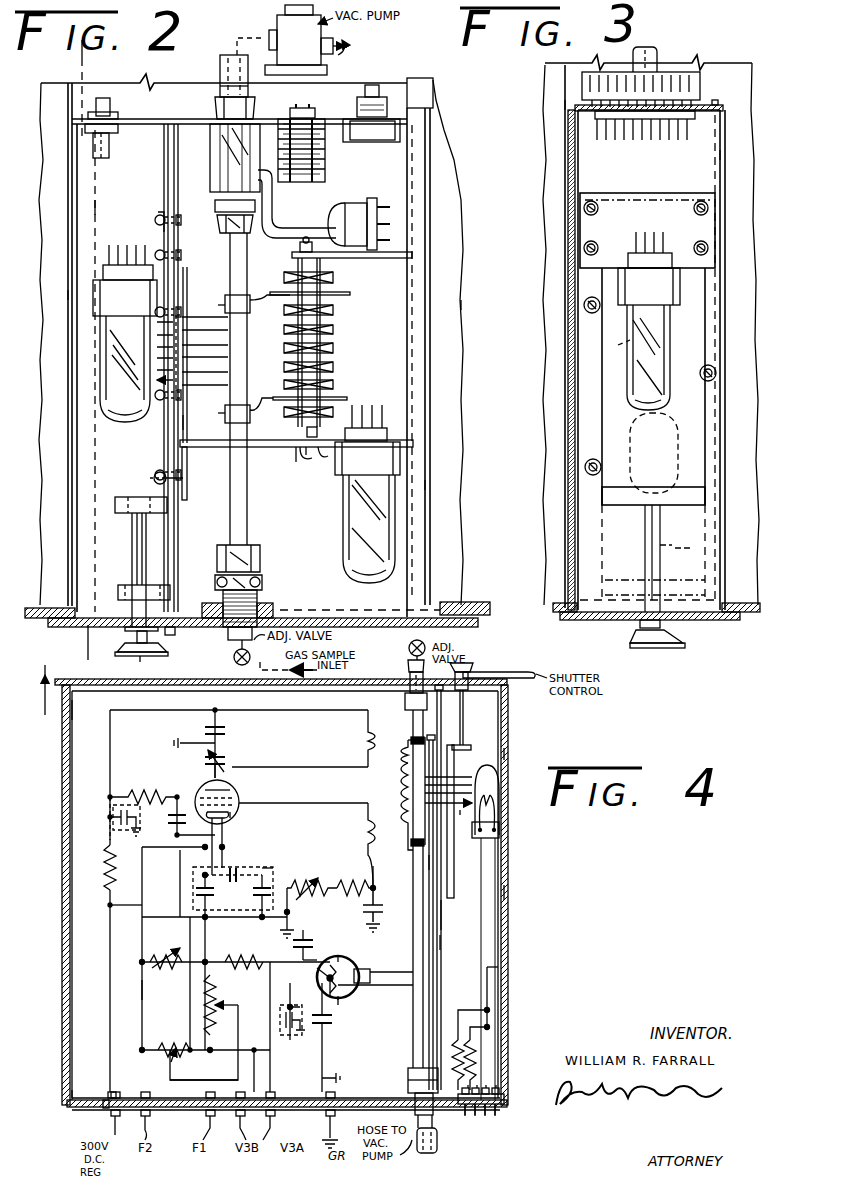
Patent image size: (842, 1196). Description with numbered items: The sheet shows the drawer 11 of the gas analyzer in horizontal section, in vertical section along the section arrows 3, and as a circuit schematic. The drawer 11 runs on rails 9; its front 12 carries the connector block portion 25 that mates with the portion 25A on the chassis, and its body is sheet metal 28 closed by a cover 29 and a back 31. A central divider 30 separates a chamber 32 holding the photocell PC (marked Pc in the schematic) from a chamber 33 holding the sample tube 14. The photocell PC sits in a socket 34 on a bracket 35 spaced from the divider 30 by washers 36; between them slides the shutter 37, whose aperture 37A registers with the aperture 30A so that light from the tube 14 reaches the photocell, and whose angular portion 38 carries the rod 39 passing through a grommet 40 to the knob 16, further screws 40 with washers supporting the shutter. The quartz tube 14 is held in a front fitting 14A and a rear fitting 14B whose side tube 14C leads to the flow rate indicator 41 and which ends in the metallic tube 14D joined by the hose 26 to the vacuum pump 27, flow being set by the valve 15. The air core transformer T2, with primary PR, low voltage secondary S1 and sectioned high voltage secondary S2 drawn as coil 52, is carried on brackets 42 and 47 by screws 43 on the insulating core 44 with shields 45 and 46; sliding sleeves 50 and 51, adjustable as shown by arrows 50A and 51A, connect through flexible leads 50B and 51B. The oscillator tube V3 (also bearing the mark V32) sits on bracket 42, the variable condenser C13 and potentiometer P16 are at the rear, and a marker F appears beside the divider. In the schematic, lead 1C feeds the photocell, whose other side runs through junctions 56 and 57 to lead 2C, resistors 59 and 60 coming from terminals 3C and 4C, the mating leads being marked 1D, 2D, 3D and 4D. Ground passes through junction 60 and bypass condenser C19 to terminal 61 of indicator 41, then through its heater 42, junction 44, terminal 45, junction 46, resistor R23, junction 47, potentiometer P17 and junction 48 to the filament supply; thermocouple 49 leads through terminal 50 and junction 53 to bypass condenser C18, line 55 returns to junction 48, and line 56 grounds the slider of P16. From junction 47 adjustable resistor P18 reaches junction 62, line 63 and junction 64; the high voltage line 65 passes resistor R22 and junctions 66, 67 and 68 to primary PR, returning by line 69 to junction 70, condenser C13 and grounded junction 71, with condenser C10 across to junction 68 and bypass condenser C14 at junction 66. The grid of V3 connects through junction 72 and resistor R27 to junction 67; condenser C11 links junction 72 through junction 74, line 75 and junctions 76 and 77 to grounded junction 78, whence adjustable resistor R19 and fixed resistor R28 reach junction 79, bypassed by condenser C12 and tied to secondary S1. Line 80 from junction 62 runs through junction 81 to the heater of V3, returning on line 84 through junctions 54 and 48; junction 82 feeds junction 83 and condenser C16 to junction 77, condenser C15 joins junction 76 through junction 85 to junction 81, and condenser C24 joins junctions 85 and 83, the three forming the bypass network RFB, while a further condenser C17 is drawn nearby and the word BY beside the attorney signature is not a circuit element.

In FIG. 2, the section arrows 3 is at (92, 73).
In FIG. 2, the rails 9 is at (70, 292).
In FIG. 3, the rails 9 is at (568, 104).
In FIG. 2, the drawer 11 is at (440, 484).
In FIG. 4, the drawer 11 is at (510, 752).
In FIG. 2, the front of the drawer 12 is at (480, 600).
In FIG. 4, the front of the drawer 12 is at (78, 676).
In FIG. 2, the sample tube 14 is at (250, 526).
In FIG. 4, the sample tube 14 is at (410, 996).
In FIG. 2, the front fitting 14A is at (262, 578).
In FIG. 4, the front fitting 14A is at (440, 710).
In FIG. 2, the rear fitting 14B is at (226, 160).
In FIG. 4, the rear fitting 14B is at (408, 1080).
In FIG. 2, the side connection tube 14C is at (290, 236).
In FIG. 2, the metallic tube 14D is at (220, 73).
In FIG. 3, the metallic tube 14D is at (664, 56).
In FIG. 2, the valve 15 is at (233, 658).
In FIG. 4, the valve 15 is at (410, 655).
In FIG. 2, the knob 16 is at (143, 657).
In FIG. 3, the knob 16 is at (672, 650).
In FIG. 4, the knob 16 is at (472, 658).
In FIG. 2, the connector block portion on drawer 25 is at (88, 128).
In FIG. 3, the connector block portion on drawer 25 is at (690, 117).
In FIG. 4, the connector block portion on drawer 25 is at (107, 1090).
In FIG. 2, the connector block portion on chassis 25A is at (90, 99).
In FIG. 3, the connector block portion on chassis 25A is at (700, 90).
In FIG. 4, the connector block portion on chassis 25A is at (105, 1108).
In FIG. 2, the hose connection 26 is at (235, 36).
In FIG. 4, the hose connection 26 is at (418, 1128).
In FIG. 2, the vacuum pump 27 is at (280, 22).
In FIG. 2, the sheet metal 28 is at (463, 303).
In FIG. 4, the sheet metal 28 is at (512, 893).
In FIG. 3, the cover 29 is at (722, 155).
In FIG. 2, the central divider 30 is at (164, 170).
In FIG. 3, the central divider 30 is at (712, 516).
In FIG. 4, the central divider 30 is at (446, 925).
In FIG. 2, the aperture in divider wall 30A is at (182, 344).
In FIG. 3, the aperture in divider wall 30A is at (630, 370).
In FIG. 4, the aperture in divider wall 30A is at (448, 790).
In FIG. 2, the back of the drawer 31 is at (196, 119).
In FIG. 4, the back of the drawer 31 is at (82, 1103).
In FIG. 2, the photocell chamber 32 is at (122, 206).
In FIG. 4, the photocell chamber 32 is at (476, 948).
In FIG. 2, the tube chamber 33 is at (367, 182).
In FIG. 4, the tube chamber 33 is at (96, 717).
In FIG. 2, the socket 34 is at (108, 294).
In FIG. 3, the socket 34 is at (665, 287).
In FIG. 2, the bracket 35 is at (158, 240).
In FIG. 3, the bracket 35 is at (640, 208).
In FIG. 2, the washers 36 is at (159, 214).
In FIG. 3, the washers 36 is at (597, 243).
In FIG. 2, the shutter 37 is at (170, 290).
In FIG. 3, the shutter 37 is at (690, 445).
In FIG. 4, the shutter 37 is at (452, 878).
In FIG. 3, the shutter aperture 37A is at (625, 373).
In FIG. 4, the shutter aperture 37A is at (462, 815).
In FIG. 2, the angularly disposed portion 38 is at (128, 497).
In FIG. 3, the angularly disposed portion 38 is at (624, 510).
In FIG. 2, the rod 39 is at (134, 548).
In FIG. 3, the rod 39 is at (663, 625).
In FIG. 4, the rod 39 is at (468, 700).
In FIG. 2, the grommet 40 is at (160, 632).
In FIG. 3, the grommet 40 is at (584, 308).
In FIG. 2, the flow rate indicator 41 is at (353, 210).
In FIG. 4, the flow rate indicator 41 is at (345, 964).
In FIG. 2, the bracket 42 is at (306, 458).
In FIG. 4, the bracket 42 is at (370, 970).
In FIG. 2, the end screws 43 is at (308, 244).
In FIG. 2, the insulating core 44 is at (334, 412).
In FIG. 4, the insulating core 44 is at (332, 957).
In FIG. 2, the insulating shield 45 is at (330, 396).
In FIG. 4, the insulating shield 45 is at (320, 968).
In FIG. 2, the insulating shield 46 is at (343, 296).
In FIG. 4, the insulating shield 46 is at (318, 960).
In FIG. 2, the bracket 47 is at (378, 258).
In FIG. 4, the bracket 47 is at (205, 960).
In FIG. 4, the junction 48 is at (210, 1050).
In FIG. 4, the thermocouple 49 is at (345, 996).
In FIG. 2, the metal sleeve 50 is at (246, 405).
In FIG. 4, the metal sleeve 50 is at (320, 982).
In FIG. 2, the adjustment arrows 50A is at (218, 402).
In FIG. 4, the adjustment arrows 50A is at (408, 852).
In FIG. 2, the flexible lead 50B is at (258, 418).
In FIG. 2, the metal sleeve 51 is at (246, 312).
In FIG. 4, the metal sleeve 51 is at (403, 746).
In FIG. 2, the adjustment arrows 51A is at (218, 295).
In FIG. 4, the adjustment arrows 51A is at (400, 760).
In FIG. 2, the flexible lead 51B is at (256, 296).
In FIG. 4, the coil 52 is at (396, 790).
In FIG. 4, the junction 53 is at (290, 1005).
In FIG. 4, the junction 54 is at (196, 1059).
In FIG. 2, the line 55 is at (306, 106).
In FIG. 4, the line 55 is at (254, 1050).
In FIG. 4, the junction 56 is at (190, 1080).
In FIG. 4, the junction 57 is at (485, 1010).
In FIG. 4, the resistor 59 is at (450, 1038).
In FIG. 4, the resistor 60 is at (322, 1078).
In FIG. 4, the indicator terminal 61 is at (318, 990).
In FIG. 4, the junction 62 is at (142, 962).
In FIG. 4, the line 63 is at (142, 990).
In FIG. 4, the junction 64 is at (142, 1050).
In FIG. 4, the supply line 65 is at (108, 997).
In FIG. 4, the junction 66 is at (112, 818).
In FIG. 4, the junction 67 is at (109, 790).
In FIG. 4, the junction 68 is at (215, 708).
In FIG. 4, the line 69 is at (300, 768).
In FIG. 4, the junction 70 is at (214, 768).
In FIG. 4, the grounded junction 71 is at (222, 742).
In FIG. 4, the junction 72 is at (177, 795).
In FIG. 4, the junction 74 is at (176, 834).
In FIG. 4, the line 75 is at (180, 888).
In FIG. 4, the junction 76 is at (205, 918).
In FIG. 4, the junction 77 is at (284, 924).
In FIG. 4, the grounded junction 78 is at (288, 912).
In FIG. 4, the junction 79 is at (375, 890).
In FIG. 4, the line 80 is at (142, 916).
In FIG. 4, the junction 81 is at (203, 848).
In FIG. 4, the junction 82 is at (224, 846).
In FIG. 4, the junction 83 is at (268, 870).
In FIG. 4, the line 84 is at (190, 930).
In FIG. 4, the junction 85 is at (205, 875).
In FIG. 4, the condenser C10 is at (210, 728).
In FIG. 4, the condenser C11 is at (174, 816).
In FIG. 4, the condenser C12 is at (375, 917).
In FIG. 2, the variable air insulated condenser C13 is at (325, 157).
In FIG. 4, the variable air insulated condenser C13 is at (230, 760).
In FIG. 4, the radio frequency bypass condenser C14 is at (116, 830).
In FIG. 4, the condenser C15 is at (200, 892).
In FIG. 4, the condenser C16 is at (262, 896).
In FIG. 4, the capacitor C17 is at (306, 940).
In FIG. 4, the radio frequency bypass condenser C18 is at (280, 1012).
In FIG. 4, the radio frequency bypass condenser C19 is at (328, 1020).
In FIG. 4, the condenser C24 is at (233, 880).
In FIG. 4, the resistor R19 is at (312, 885).
In FIG. 4, the resistor R22 is at (99, 867).
In FIG. 4, the resistor R23 is at (242, 953).
In FIG. 4, the resistor R27 is at (143, 786).
In FIG. 4, the fixed resistor R28 is at (355, 883).
In FIG. 2, the potentiometer P16 is at (385, 137).
In FIG. 4, the potentiometer P16 is at (168, 1045).
In FIG. 4, the potentiometer resistor P17 is at (213, 992).
In FIG. 4, the adjustable resistor P18 is at (166, 967).
In FIG. 2, the radio frequency oscillator tube V3 is at (343, 528).
In FIG. 4, the radio frequency oscillator tube V3 is at (238, 790).
In FIG. 4, the tube element V32 is at (236, 812).
In FIG. 2, the transformer T2 is at (348, 322).
In FIG. 4, the transformer T2 is at (370, 708).
In FIG. 2, the low voltage secondary S1 is at (334, 276).
In FIG. 2, the high voltage output secondary S2 is at (340, 348).
In FIG. 2, the photocell PC is at (118, 416).
In FIG. 3, the photocell PC is at (680, 338).
In FIG. 4, the photocell Pc is at (488, 765).
In FIG. 2, the primary winding PR is at (296, 456).
In FIG. 4, the primary winding PR is at (366, 745).
In FIG. 2, the filament F is at (180, 425).
In FIG. 4, the filament F is at (428, 860).
In FIG. 4, the radio frequency bypass network RFB is at (110, 808).
In FIG. 4, the terminal block BY is at (495, 1100).
In FIG. 4, the lead 4D is at (470, 1088).
In FIG. 4, the lead 3D is at (478, 1088).
In FIG. 4, the lead 2D is at (486, 1088).
In FIG. 4, the lead 1D is at (496, 1088).
In FIG. 4, the terminal 4C is at (465, 1115).
In FIG. 4, the terminal 3C is at (475, 1115).
In FIG. 4, the lead 2C is at (485, 1115).
In FIG. 4, the lead 1C is at (495, 1115).